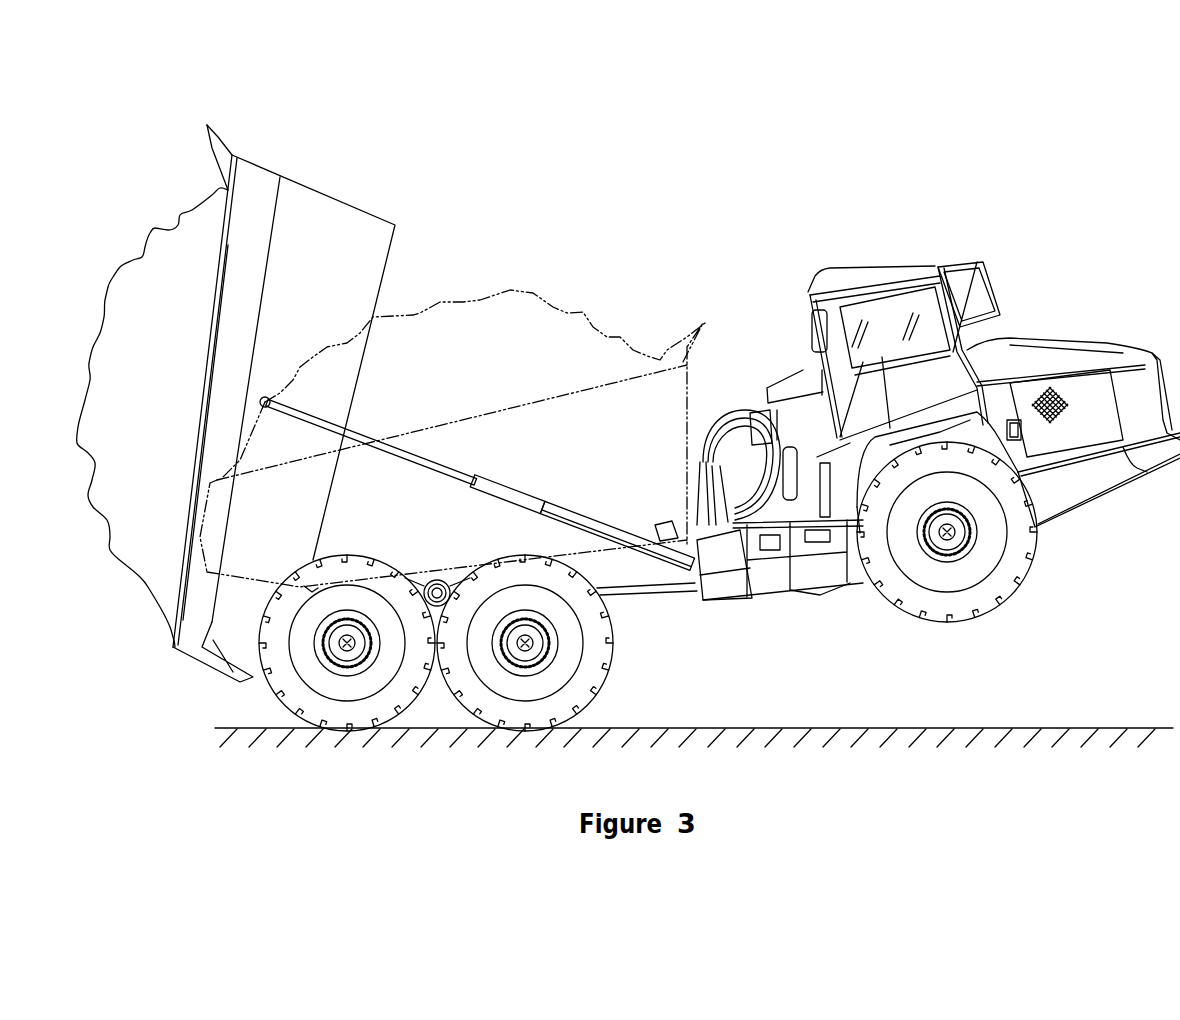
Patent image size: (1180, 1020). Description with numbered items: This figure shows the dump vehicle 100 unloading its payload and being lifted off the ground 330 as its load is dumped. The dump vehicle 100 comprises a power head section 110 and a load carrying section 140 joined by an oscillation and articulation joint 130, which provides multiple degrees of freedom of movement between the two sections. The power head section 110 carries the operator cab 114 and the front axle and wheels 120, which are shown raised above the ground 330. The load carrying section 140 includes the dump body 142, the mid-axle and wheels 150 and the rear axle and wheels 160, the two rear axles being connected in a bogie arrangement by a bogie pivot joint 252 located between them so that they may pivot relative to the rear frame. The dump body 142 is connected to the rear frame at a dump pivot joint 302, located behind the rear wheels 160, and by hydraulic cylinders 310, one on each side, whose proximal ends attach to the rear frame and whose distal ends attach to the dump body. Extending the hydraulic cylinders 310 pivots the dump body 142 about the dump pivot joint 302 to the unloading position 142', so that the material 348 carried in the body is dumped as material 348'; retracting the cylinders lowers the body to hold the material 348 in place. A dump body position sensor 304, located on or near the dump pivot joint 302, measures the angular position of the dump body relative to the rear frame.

The dump vehicle 100 is at (810, 165).
The power head section 110 is at (990, 240).
The operator cab 114 is at (887, 268).
The front axle and wheels 120 is at (1000, 607).
The oscillation and articulation joint 130 is at (785, 603).
The load carrying section 140 is at (314, 407).
The dump body 142 is at (453, 404).
The dump body in unloading position 142' is at (284, 378).
The mid-axle and wheels 150 is at (448, 666).
The rear axle and wheels 160 is at (275, 705).
The bogie pivot joint 252 is at (437, 580).
The dump pivot joint 302 is at (237, 655).
The dump body position sensor 304 is at (310, 590).
The hydraulic cylinders 310 is at (683, 567).
The ground 330 is at (1112, 728).
The material 348 is at (485, 312).
The dumped material 348' is at (152, 386).